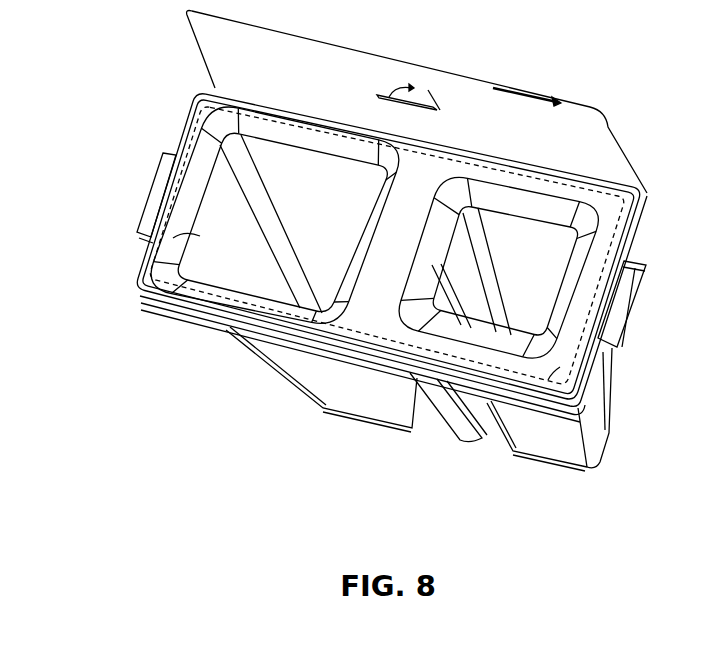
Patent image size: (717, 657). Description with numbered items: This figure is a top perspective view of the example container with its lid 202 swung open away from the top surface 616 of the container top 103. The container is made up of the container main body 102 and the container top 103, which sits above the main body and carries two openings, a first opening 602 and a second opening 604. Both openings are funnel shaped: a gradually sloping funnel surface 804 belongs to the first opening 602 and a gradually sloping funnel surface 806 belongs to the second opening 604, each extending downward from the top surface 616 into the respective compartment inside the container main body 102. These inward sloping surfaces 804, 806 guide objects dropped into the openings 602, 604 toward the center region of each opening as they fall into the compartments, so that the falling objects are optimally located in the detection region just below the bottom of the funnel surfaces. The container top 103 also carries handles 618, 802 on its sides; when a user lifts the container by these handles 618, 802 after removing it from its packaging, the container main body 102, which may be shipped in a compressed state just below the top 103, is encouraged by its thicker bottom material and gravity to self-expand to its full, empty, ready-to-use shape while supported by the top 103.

The container main body 102 is at (312, 378).
The container top 103 is at (133, 279).
The lid 202 is at (225, 47).
The first opening 602 is at (251, 163).
The second opening 604 is at (553, 259).
The top surface 616 is at (560, 366).
The handle 618 is at (630, 280).
The handle 802 is at (153, 190).
The funnel surface 804 is at (173, 237).
The funnel surface 806 is at (428, 288).